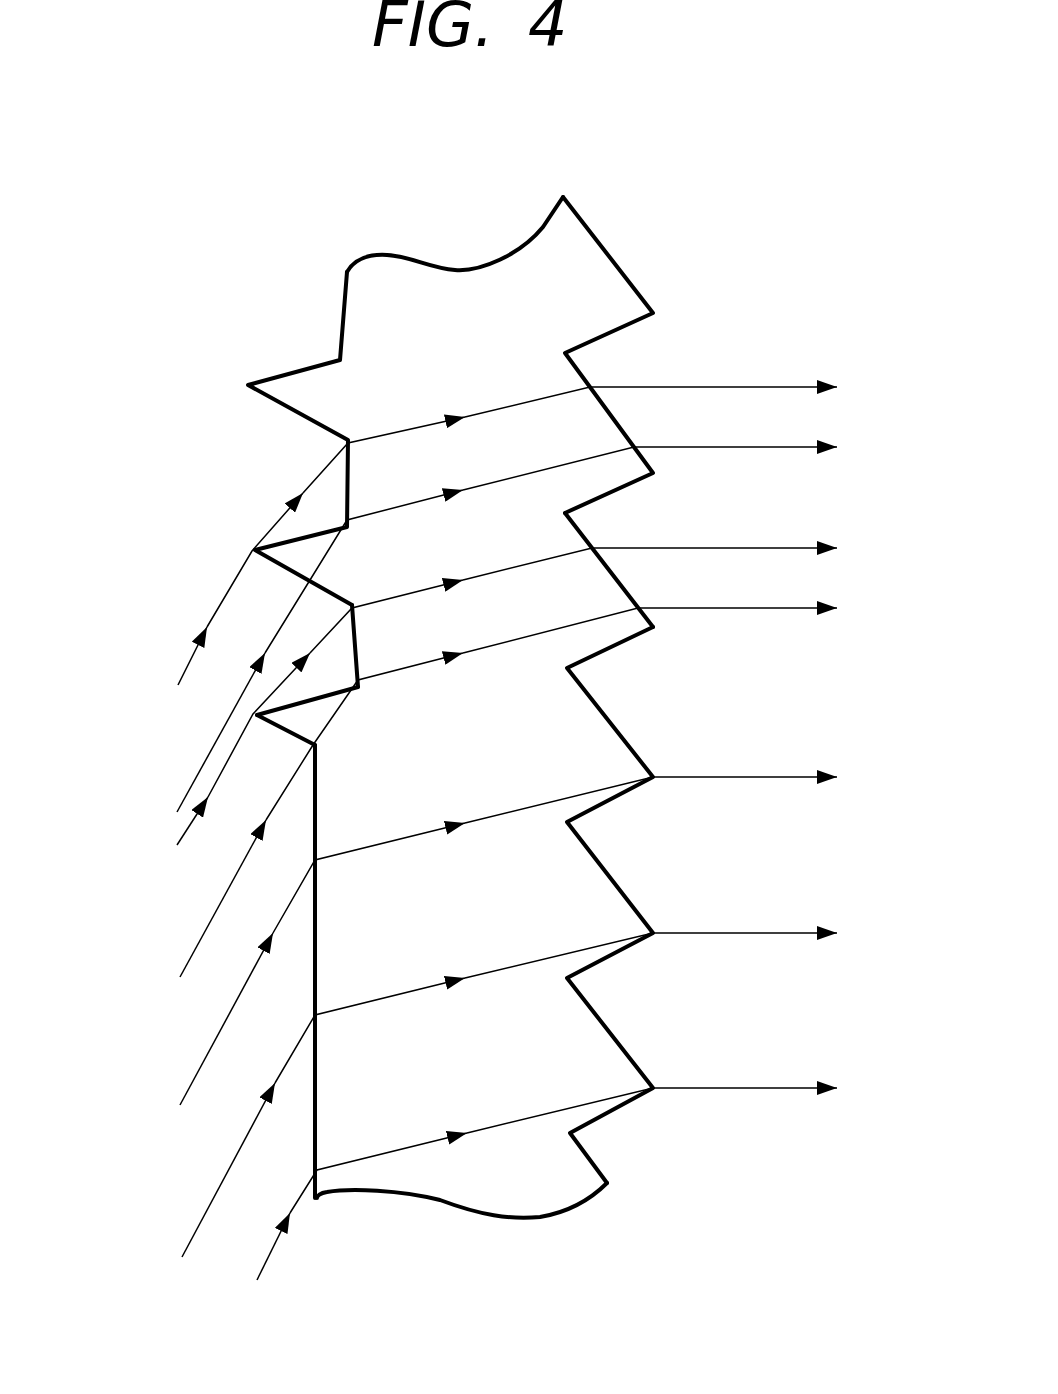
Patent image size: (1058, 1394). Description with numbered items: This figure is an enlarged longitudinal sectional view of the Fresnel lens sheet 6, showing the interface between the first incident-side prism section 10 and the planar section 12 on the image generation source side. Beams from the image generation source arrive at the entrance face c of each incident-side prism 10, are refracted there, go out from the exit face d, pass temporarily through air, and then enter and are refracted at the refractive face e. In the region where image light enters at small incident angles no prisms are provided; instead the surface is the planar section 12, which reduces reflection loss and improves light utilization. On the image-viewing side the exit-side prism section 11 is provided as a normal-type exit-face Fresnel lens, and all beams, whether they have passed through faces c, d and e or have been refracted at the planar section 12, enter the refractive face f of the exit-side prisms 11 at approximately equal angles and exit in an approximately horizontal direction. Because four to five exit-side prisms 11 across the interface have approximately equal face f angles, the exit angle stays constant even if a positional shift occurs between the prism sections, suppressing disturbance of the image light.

The Fresnel lens sheet 6 is at (452, 287).
The incident-side prism section 10 is at (225, 516).
The exit-side prism section 11 is at (658, 703).
The planar section 12 is at (317, 1148).
The entrance face c is at (286, 722).
The exit face d is at (285, 708).
The refractive face e is at (355, 643).
The refractive face of exit-side prism f is at (628, 589).